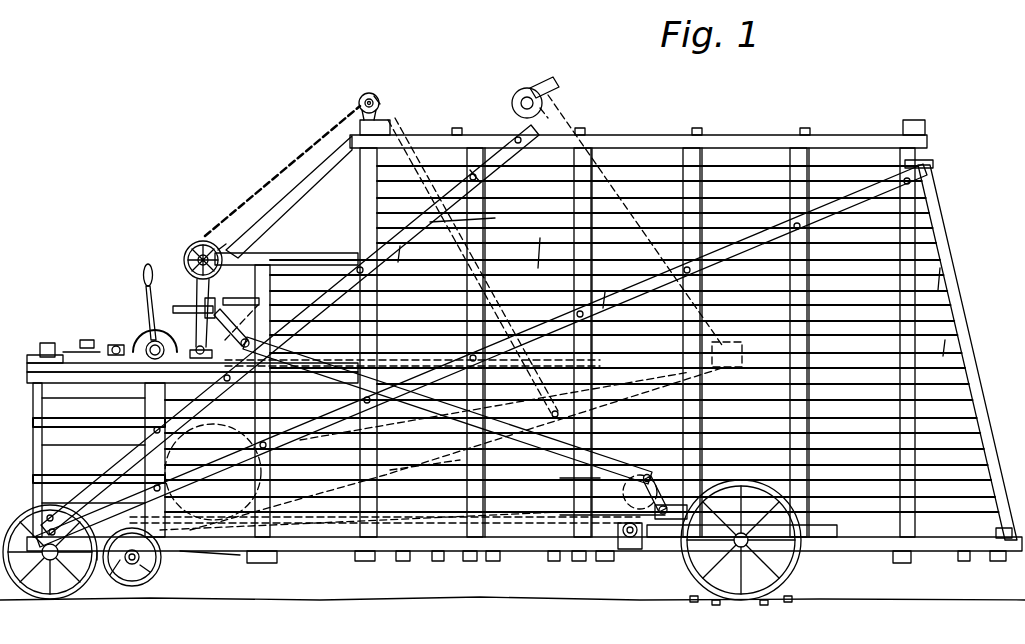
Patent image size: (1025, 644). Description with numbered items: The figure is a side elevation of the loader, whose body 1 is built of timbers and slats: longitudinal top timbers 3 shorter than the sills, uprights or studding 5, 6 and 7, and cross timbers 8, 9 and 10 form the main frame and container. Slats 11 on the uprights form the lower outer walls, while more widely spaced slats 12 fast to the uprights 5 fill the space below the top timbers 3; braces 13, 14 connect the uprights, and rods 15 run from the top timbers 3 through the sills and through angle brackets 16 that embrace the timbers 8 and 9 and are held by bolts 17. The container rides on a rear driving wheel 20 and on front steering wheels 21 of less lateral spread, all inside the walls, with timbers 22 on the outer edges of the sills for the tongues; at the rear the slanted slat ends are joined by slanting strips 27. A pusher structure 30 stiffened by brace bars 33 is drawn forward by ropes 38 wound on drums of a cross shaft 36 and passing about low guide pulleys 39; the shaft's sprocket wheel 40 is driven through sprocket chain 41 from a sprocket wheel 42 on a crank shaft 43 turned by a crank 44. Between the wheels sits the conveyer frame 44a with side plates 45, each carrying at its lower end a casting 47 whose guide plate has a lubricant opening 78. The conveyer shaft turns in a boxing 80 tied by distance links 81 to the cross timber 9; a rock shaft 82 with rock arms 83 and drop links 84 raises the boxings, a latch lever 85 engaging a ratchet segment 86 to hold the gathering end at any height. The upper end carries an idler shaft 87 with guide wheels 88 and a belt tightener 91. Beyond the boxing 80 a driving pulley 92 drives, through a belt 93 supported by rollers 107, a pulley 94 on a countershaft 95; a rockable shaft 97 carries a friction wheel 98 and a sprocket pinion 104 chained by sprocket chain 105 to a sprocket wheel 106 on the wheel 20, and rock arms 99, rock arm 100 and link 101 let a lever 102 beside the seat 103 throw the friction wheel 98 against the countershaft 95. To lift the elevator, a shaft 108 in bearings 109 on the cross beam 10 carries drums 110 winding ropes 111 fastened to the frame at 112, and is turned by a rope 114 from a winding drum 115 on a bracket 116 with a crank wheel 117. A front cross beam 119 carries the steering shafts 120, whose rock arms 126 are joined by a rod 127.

The body 1 is at (582, 342).
The longitudinal top timbers 3 is at (755, 140).
The uprights or studding 5 is at (362, 210).
The uprights or studding 6 is at (268, 282).
The uprights or studding 7 is at (192, 454).
The cross timbers 8 is at (687, 573).
The cross timbers 9 is at (262, 564).
The cross timbers 10 is at (388, 126).
The strips or slats 11 is at (982, 420).
The strips or slats 12 is at (540, 236).
The braces 13 is at (606, 302).
The braces 14 is at (400, 252).
The rods 15 is at (700, 222).
The angle brackets 16 is at (403, 562).
The bolts 17 is at (699, 570).
The rear wheel 20 is at (790, 582).
The front steering wheels 21 is at (35, 590).
The timbers 22 is at (524, 560).
The slanting beams or strips 27 is at (992, 458).
The sweep or pusher structure 30 is at (330, 406).
The brace bars 33 is at (360, 512).
The cross shaft 36 is at (180, 393).
The ropes 38 is at (185, 441).
The guide pulleys 39 is at (213, 472).
The sprocket wheel 40 is at (236, 376).
The sprocket chain 41 is at (232, 330).
The sprocket wheel 42 is at (196, 302).
The crank shaft 43 is at (214, 304).
The crank 44 is at (198, 340).
The conveyer frame 44a is at (330, 358).
The side plates 45 is at (500, 132).
The casting 47 is at (124, 580).
The opening 78 is at (146, 572).
The boxing 80 is at (86, 566).
The distance links 81 is at (210, 553).
The rock shaft 82 is at (147, 346).
The rock arms 83 is at (114, 344).
The drop links 84 is at (122, 420).
The latch lever 85 is at (148, 266).
The ratchet segment 86 is at (140, 332).
The idler shaft 87 is at (520, 96).
The guide wheels 88 is at (540, 112).
The belt tightener structure 91 is at (550, 87).
The driving pulley 92 is at (133, 566).
The driving belt 93 is at (170, 548).
The pulley 94 is at (601, 568).
The countershaft 95 is at (634, 540).
The rockably mounted shaft 97 is at (649, 472).
The friction wheel 98 is at (600, 514).
The rock arms 99 is at (680, 495).
The rock arm 100 is at (668, 478).
The link 101 is at (462, 412).
The lever 102 is at (270, 312).
The seat 103 is at (262, 296).
The sprocket pinion 104 is at (600, 478).
The sprocket chain 105 is at (700, 586).
The sprocket wheel 106 is at (822, 560).
The sustaining pulleys or rollers 107 is at (440, 410).
The shaft 108 is at (371, 96).
The bearings 109 is at (380, 101).
The drums 110 is at (361, 97).
The rope or cable 111 is at (400, 140).
The rope attachment point 112 is at (476, 219).
The rope or cable 114 is at (290, 176).
The winding drum 115 is at (198, 243).
The bracket 116 is at (192, 268).
The crank wheel 117 is at (226, 245).
The cross beam 119 is at (32, 360).
The upright steering shafts 120 is at (45, 342).
The rock arm 126 is at (80, 350).
The rod or link 127 is at (85, 338).